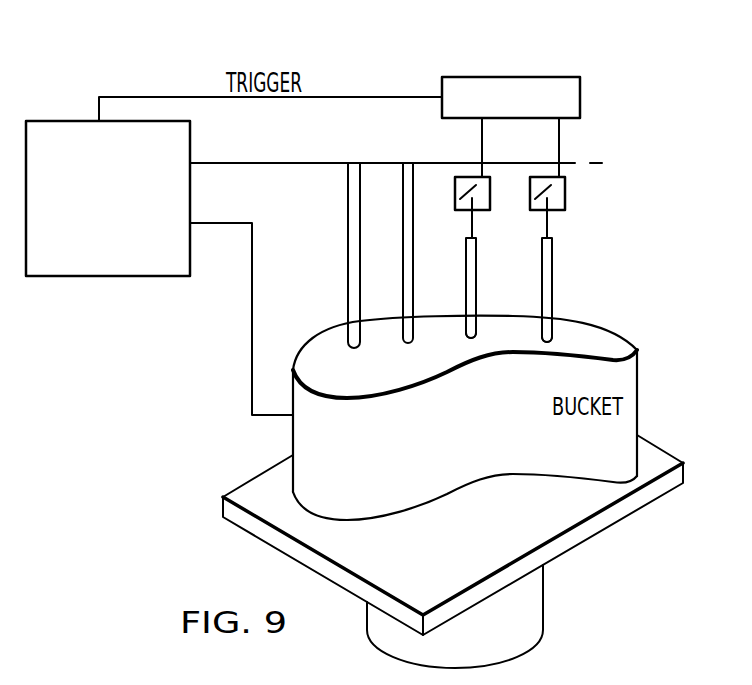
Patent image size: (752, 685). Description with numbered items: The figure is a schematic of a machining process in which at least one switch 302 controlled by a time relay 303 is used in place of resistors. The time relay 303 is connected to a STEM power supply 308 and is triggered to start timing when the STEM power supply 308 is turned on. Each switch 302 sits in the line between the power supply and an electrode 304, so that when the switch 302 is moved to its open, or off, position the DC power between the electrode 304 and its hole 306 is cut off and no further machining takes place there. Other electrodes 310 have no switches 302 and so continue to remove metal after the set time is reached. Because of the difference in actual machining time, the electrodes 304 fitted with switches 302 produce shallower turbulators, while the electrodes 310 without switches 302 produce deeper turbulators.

The STEM power supply 308 is at (108, 261).
The time relay 303 is at (557, 77).
The switch 302 is at (563, 177).
The electrode 304 is at (478, 263).
The hole 306 is at (478, 333).
The electrode 310 is at (360, 282).